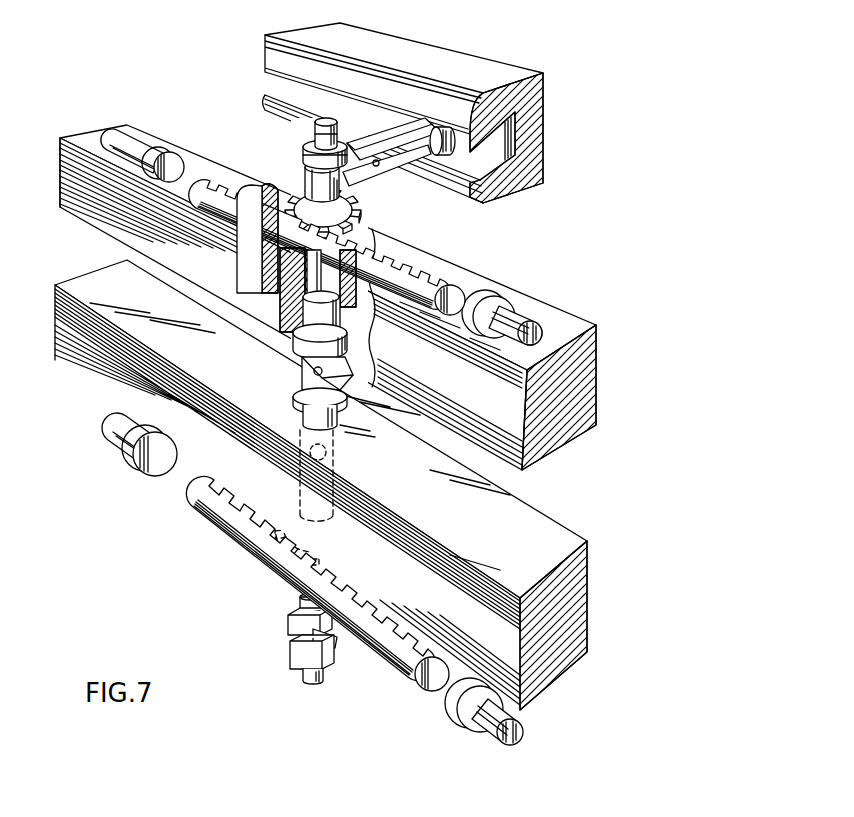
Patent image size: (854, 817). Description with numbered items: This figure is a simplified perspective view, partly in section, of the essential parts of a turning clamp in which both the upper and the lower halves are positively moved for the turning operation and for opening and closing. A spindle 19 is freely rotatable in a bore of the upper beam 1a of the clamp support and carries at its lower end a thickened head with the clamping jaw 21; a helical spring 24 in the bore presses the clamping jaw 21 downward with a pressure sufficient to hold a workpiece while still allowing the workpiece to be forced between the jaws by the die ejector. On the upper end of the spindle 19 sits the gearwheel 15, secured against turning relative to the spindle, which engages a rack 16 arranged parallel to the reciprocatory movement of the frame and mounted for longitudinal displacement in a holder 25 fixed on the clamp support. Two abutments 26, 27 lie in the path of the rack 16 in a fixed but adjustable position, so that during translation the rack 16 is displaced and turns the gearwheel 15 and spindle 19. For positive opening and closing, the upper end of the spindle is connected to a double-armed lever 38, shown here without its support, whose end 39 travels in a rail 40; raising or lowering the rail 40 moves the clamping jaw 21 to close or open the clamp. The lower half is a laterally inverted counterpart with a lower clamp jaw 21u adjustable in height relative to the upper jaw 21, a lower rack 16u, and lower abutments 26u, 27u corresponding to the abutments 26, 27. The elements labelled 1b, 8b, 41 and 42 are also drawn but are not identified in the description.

The upper beam 1a is at (550, 313).
The lower block 1b is at (80, 361).
The cam 8b is at (310, 374).
The gearwheel 15 is at (356, 214).
The rack 16 is at (430, 273).
The lower rack 16u is at (242, 542).
The spindle 19 is at (327, 121).
The clamping jaw 21 is at (340, 347).
The lower clamp jaw 21u is at (338, 418).
The helical spring 24 is at (278, 300).
The holder 25 is at (252, 189).
The abutment 26 is at (490, 298).
The lower abutment 26u is at (457, 713).
The abutment 27 is at (165, 148).
The lower abutment 27u is at (150, 470).
The double-armed lever 38 is at (397, 137).
The lever end 39 is at (438, 127).
The rail 40 is at (493, 67).
The crank 41 is at (347, 184).
The link arm 42 is at (379, 167).